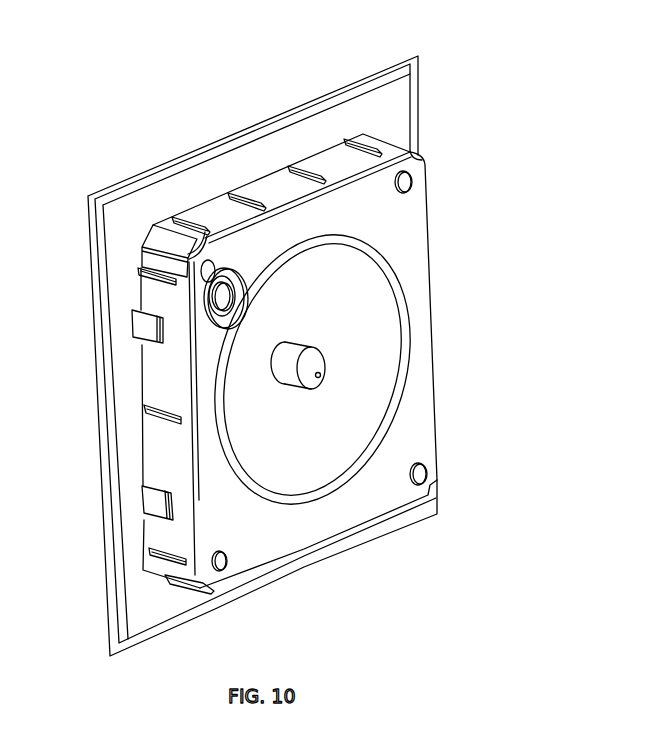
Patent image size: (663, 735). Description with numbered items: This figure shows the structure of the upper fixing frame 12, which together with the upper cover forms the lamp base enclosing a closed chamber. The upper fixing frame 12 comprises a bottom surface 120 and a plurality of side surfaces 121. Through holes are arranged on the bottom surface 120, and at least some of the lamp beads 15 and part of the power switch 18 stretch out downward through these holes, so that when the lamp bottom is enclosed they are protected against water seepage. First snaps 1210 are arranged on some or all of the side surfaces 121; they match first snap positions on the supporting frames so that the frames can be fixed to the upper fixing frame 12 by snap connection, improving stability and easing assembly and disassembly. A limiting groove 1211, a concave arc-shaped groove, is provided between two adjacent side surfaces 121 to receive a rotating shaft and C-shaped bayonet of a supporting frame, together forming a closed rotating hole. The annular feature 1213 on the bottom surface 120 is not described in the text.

The upper fixing frame 12 is at (267, 40).
The bottom surface 120 is at (340, 197).
The side surfaces 121 is at (222, 211).
The first snaps 1210 is at (140, 492).
The limiting groove 1211 is at (146, 226).
The annular rib 1213 is at (362, 292).
The lamp beads 15 is at (323, 374).
The power switch 18 is at (225, 295).